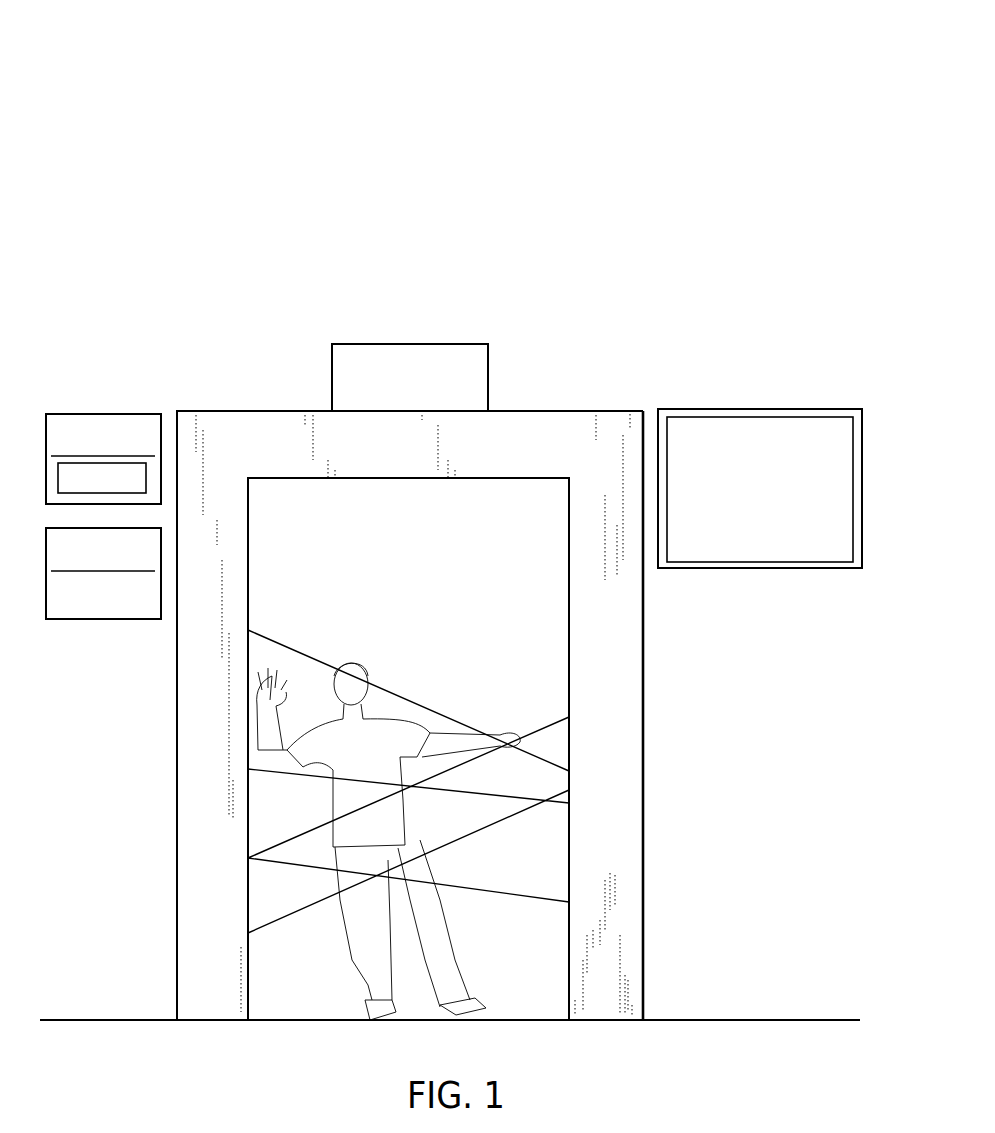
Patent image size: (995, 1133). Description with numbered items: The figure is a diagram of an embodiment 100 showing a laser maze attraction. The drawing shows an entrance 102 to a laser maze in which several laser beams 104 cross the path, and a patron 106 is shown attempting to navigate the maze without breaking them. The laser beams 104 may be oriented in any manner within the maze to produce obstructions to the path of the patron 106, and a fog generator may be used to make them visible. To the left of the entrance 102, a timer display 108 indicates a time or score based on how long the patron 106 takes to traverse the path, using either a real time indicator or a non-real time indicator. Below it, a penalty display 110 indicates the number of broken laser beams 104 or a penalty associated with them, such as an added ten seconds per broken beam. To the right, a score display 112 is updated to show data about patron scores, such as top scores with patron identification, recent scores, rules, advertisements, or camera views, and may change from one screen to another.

The embodiment 100 is at (173, 167).
The entrance 102 is at (570, 678).
The laser beams 104 is at (533, 892).
The patron 106 is at (368, 985).
The timer display 108 is at (88, 414).
The penalty display 110 is at (139, 619).
The score display 112 is at (768, 409).